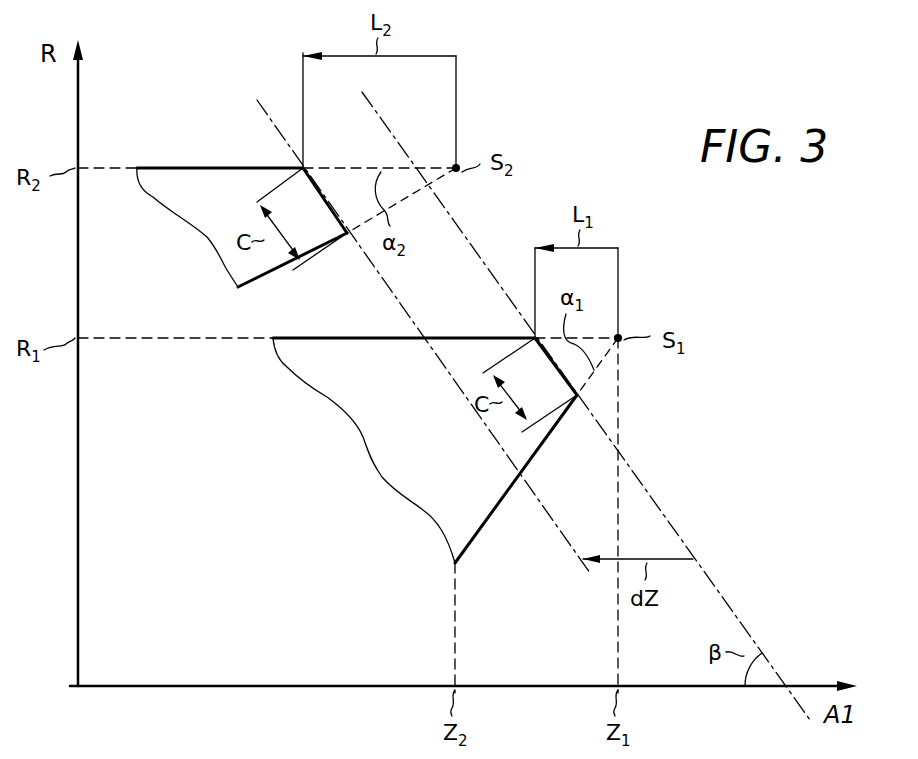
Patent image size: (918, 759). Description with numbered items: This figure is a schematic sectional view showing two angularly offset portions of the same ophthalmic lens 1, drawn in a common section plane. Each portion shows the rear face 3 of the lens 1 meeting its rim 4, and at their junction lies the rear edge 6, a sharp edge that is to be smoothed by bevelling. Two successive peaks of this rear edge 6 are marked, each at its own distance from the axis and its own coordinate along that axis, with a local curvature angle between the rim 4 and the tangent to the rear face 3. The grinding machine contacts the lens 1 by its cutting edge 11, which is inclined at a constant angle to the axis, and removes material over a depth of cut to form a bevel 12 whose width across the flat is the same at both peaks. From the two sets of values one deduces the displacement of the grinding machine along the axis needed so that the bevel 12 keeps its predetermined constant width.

The ophthalmic lens 1 is at (164, 162).
The rear face 3 is at (254, 284).
The rim 4 is at (222, 166).
The rear edge 6 is at (462, 160).
The cutting edge 11 is at (720, 598).
The bevel 12 is at (321, 196).